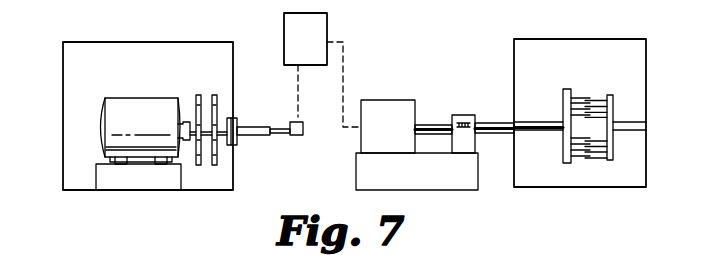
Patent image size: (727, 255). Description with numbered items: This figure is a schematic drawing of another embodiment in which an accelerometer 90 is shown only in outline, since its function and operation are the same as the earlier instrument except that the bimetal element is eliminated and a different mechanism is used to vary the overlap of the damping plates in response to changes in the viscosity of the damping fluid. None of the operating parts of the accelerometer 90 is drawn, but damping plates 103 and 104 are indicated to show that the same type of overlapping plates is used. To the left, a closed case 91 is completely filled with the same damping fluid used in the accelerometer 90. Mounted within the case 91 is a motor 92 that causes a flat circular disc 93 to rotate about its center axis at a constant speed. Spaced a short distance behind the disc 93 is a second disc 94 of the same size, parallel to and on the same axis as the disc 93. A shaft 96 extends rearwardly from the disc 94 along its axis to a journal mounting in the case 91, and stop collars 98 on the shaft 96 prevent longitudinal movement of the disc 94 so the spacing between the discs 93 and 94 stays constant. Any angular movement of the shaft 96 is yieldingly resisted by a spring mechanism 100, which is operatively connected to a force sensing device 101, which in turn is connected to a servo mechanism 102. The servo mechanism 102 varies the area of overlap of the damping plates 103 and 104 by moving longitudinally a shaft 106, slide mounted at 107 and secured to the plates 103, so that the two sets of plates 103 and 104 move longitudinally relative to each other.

The accelerometer 90 is at (601, 193).
The closed case 91 is at (56, 184).
The motor 92 is at (125, 103).
The flat circular disc 93 is at (197, 96).
The second disc 94 is at (219, 160).
The shaft 96 is at (256, 136).
The stop collars 98 is at (236, 118).
The spring mechanism 100 is at (284, 130).
The force sensing device 101 is at (322, 27).
The servo mechanism 102 is at (380, 107).
The damping plates 103 is at (578, 93).
The damping plates 104 is at (597, 95).
The shaft 106 is at (495, 128).
The slide mounting 107 is at (463, 116).